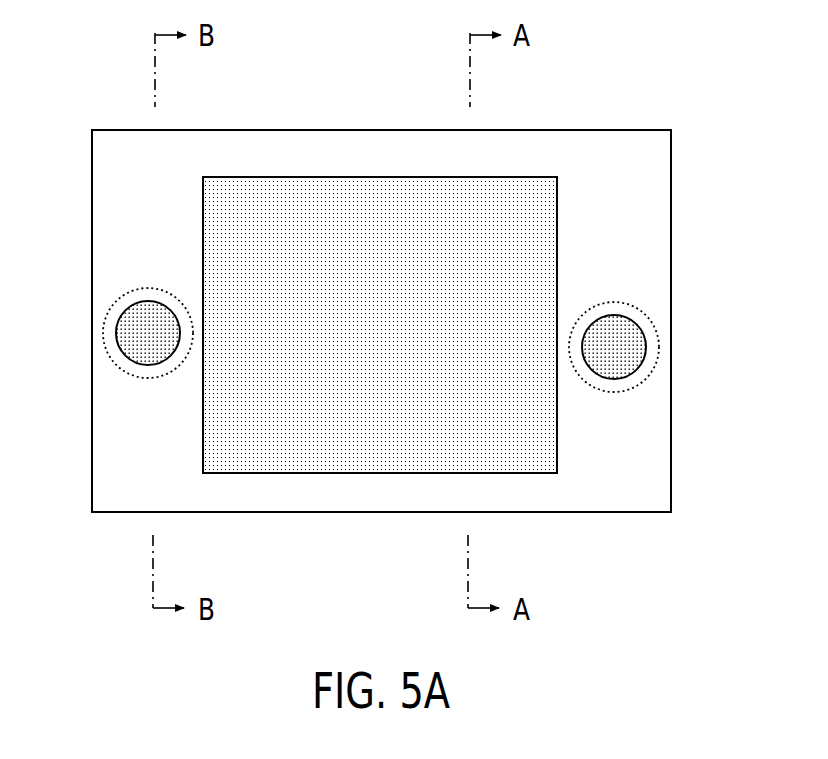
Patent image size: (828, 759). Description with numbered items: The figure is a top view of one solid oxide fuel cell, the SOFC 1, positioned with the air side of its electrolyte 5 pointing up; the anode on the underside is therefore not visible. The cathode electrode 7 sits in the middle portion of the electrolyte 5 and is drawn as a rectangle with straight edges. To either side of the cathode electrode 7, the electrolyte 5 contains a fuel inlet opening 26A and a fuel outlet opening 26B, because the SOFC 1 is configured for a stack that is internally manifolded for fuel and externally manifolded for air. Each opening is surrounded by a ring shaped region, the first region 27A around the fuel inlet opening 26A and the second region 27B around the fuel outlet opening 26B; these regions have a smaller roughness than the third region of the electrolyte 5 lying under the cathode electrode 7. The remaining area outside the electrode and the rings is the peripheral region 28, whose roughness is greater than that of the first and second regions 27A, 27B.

The SOFC 1 is at (652, 62).
The electrolyte 5 is at (281, 146).
The cathode electrode 7 is at (393, 196).
The peripheral region 28 is at (395, 490).
The fuel inlet opening 26A is at (122, 337).
The first region 27A is at (109, 316).
The fuel outlet opening 26B is at (632, 355).
The second region 27B is at (648, 318).